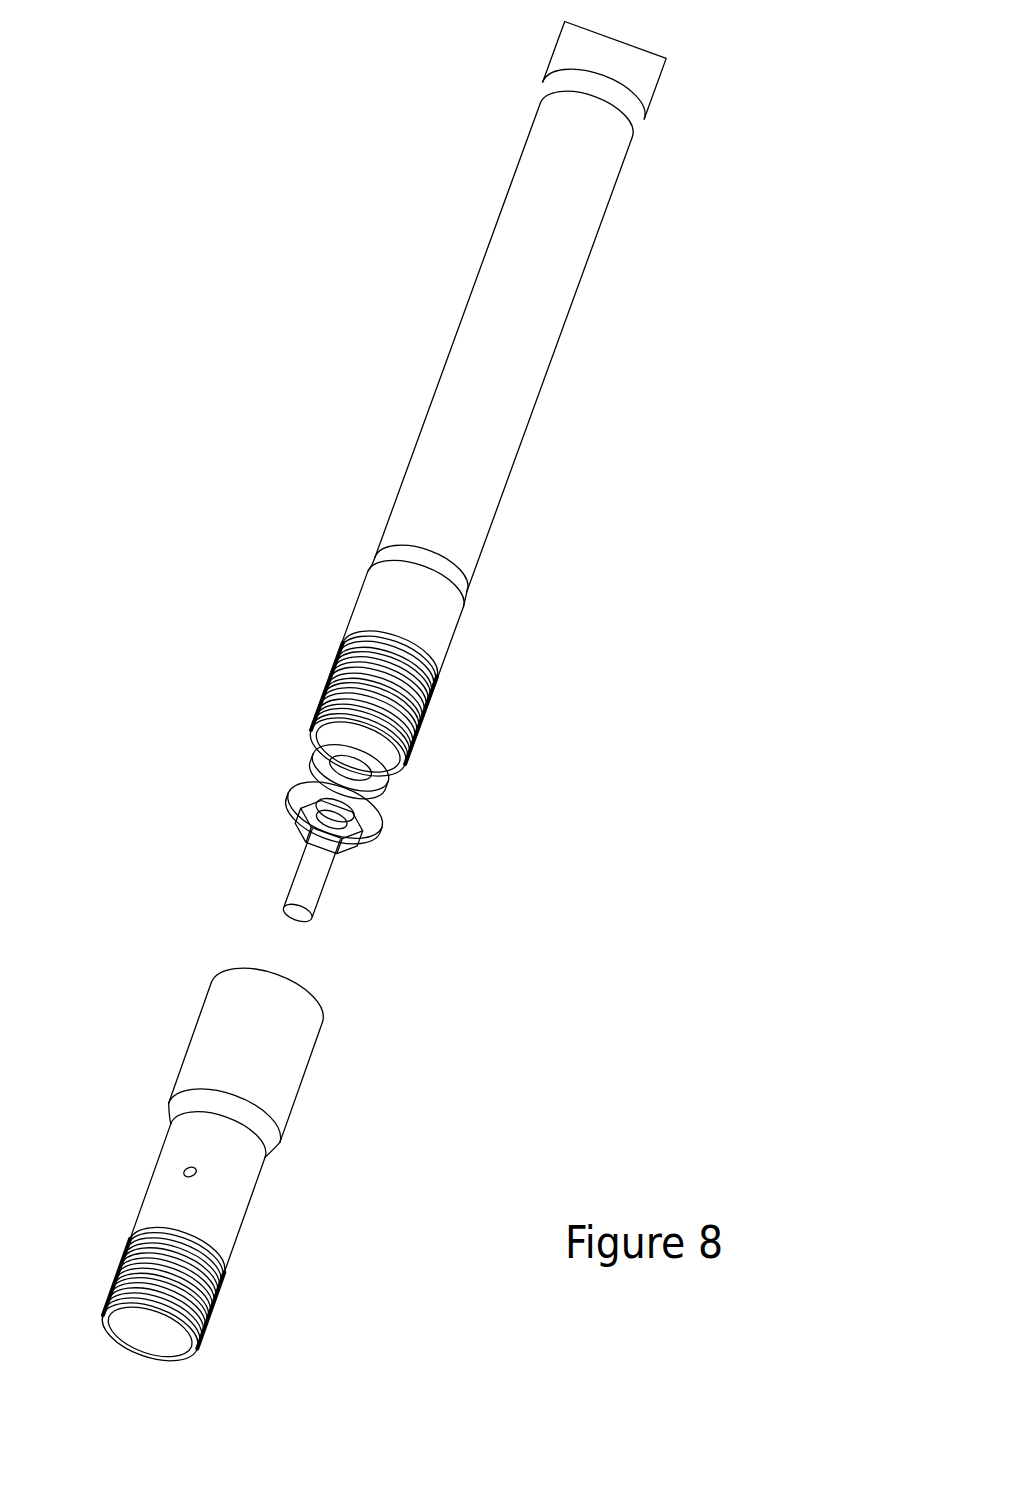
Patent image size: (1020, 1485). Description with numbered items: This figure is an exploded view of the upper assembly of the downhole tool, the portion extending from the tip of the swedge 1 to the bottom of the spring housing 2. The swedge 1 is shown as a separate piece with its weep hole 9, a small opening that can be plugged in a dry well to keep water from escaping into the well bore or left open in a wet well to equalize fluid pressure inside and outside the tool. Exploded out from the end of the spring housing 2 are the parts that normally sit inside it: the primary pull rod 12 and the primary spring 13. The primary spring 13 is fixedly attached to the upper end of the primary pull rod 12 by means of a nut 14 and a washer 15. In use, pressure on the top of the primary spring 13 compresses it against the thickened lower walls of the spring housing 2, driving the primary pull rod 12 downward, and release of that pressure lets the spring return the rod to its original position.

The swedge 1 is at (284, 1057).
The spring housing 2 is at (478, 297).
The weep hole 9 is at (198, 1174).
The primary pull rod 12 is at (308, 883).
The primary spring 13 is at (320, 763).
The nut 14 is at (345, 833).
The washer 15 is at (295, 808).